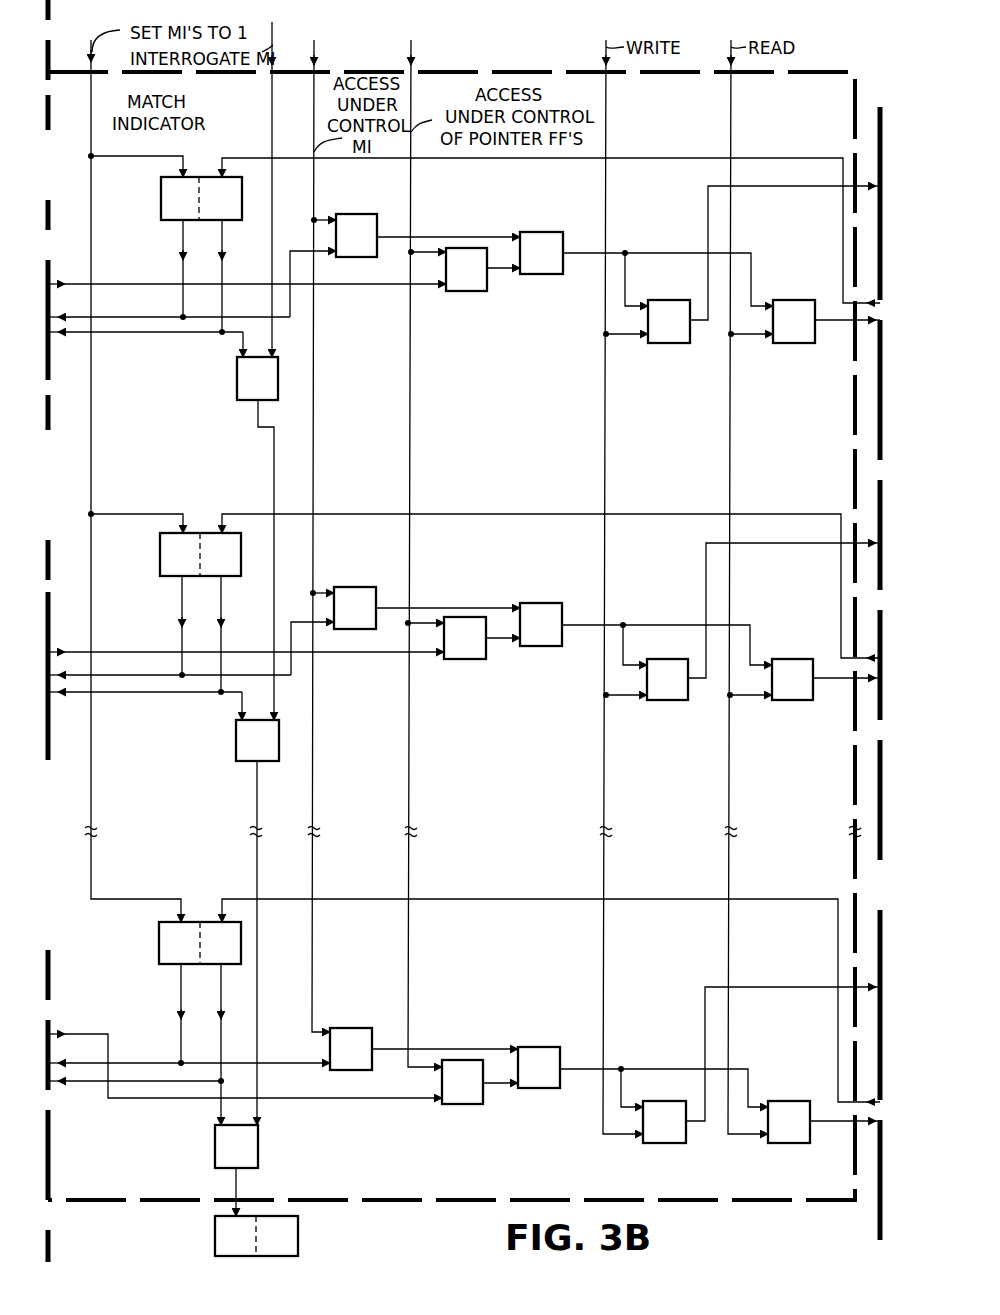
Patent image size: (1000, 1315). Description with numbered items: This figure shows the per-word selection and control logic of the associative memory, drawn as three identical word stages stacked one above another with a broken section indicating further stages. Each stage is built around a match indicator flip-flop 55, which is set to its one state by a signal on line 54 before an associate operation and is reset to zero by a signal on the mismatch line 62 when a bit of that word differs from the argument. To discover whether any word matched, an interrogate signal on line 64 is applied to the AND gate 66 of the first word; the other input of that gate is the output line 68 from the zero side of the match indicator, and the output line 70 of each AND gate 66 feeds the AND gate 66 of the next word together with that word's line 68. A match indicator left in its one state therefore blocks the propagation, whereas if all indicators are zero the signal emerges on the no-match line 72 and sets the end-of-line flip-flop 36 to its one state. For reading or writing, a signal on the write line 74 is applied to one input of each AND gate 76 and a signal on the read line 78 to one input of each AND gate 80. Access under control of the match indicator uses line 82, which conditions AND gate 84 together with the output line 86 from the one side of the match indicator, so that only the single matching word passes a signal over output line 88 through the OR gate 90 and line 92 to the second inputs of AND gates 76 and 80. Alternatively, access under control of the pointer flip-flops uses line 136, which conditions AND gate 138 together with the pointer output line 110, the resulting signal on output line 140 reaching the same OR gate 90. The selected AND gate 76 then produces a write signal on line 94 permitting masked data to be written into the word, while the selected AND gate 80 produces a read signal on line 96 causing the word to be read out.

The set line 54 is at (146, 898).
The interrogate line 64 is at (272, 50).
The access-under-control-of-match-indicator line 82 is at (316, 50).
The access-under-control-of-pointer-flip-flops line 136 is at (413, 50).
The write line 74 is at (606, 47).
The read line 78 is at (731, 47).
The match indicator flip-flop 55 is at (199, 177).
The mismatch line 62 is at (260, 150).
The output line from the one side of the match indicator 86 is at (182, 252).
The output line from the zero side of the match indicator 68 is at (222, 250).
The output line from the one side of the pointer flip-flop 110 is at (92, 280).
The AND gate 66 is at (237, 376).
The output line 70 is at (274, 448).
The no-match line 72 is at (237, 1190).
The end-of-line flip-flop 36 is at (298, 1238).
The AND gate 84 is at (365, 214).
The output line 88 is at (470, 237).
The AND gate 138 is at (468, 291).
The output line 140 is at (500, 268).
The OR gate 90 is at (552, 232).
The line 92 is at (695, 253).
The AND gate 76 is at (670, 300).
The AND gate 80 is at (799, 300).
The output line 94 is at (832, 186).
The output line 96 is at (849, 320).